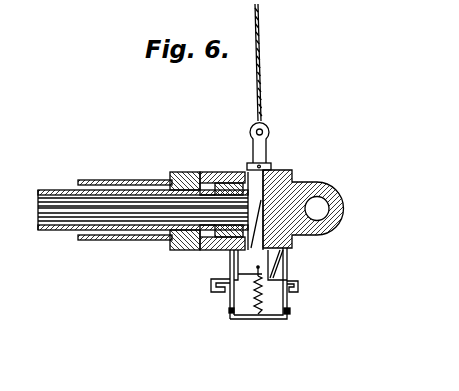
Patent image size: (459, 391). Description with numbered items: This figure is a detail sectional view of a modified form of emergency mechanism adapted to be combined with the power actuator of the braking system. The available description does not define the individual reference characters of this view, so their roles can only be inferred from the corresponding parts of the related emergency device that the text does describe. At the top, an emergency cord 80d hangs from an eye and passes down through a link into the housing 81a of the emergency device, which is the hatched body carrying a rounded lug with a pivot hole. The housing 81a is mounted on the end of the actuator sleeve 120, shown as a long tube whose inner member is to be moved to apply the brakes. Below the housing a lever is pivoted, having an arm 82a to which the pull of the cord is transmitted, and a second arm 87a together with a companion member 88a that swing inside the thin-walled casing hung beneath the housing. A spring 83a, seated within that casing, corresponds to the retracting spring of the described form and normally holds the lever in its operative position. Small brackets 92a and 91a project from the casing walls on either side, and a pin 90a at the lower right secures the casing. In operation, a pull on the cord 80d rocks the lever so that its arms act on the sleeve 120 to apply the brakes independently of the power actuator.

The suspension wire 80d is at (262, 84).
The link member 81a is at (222, 172).
The tube 120 is at (127, 213).
The nut 82a is at (252, 252).
The lever arm 88a is at (257, 269).
The bracket 92a is at (232, 283).
The spring 83a is at (260, 298).
The lever 87a is at (283, 267).
The bracket 91a is at (298, 290).
The pin 90a is at (288, 312).